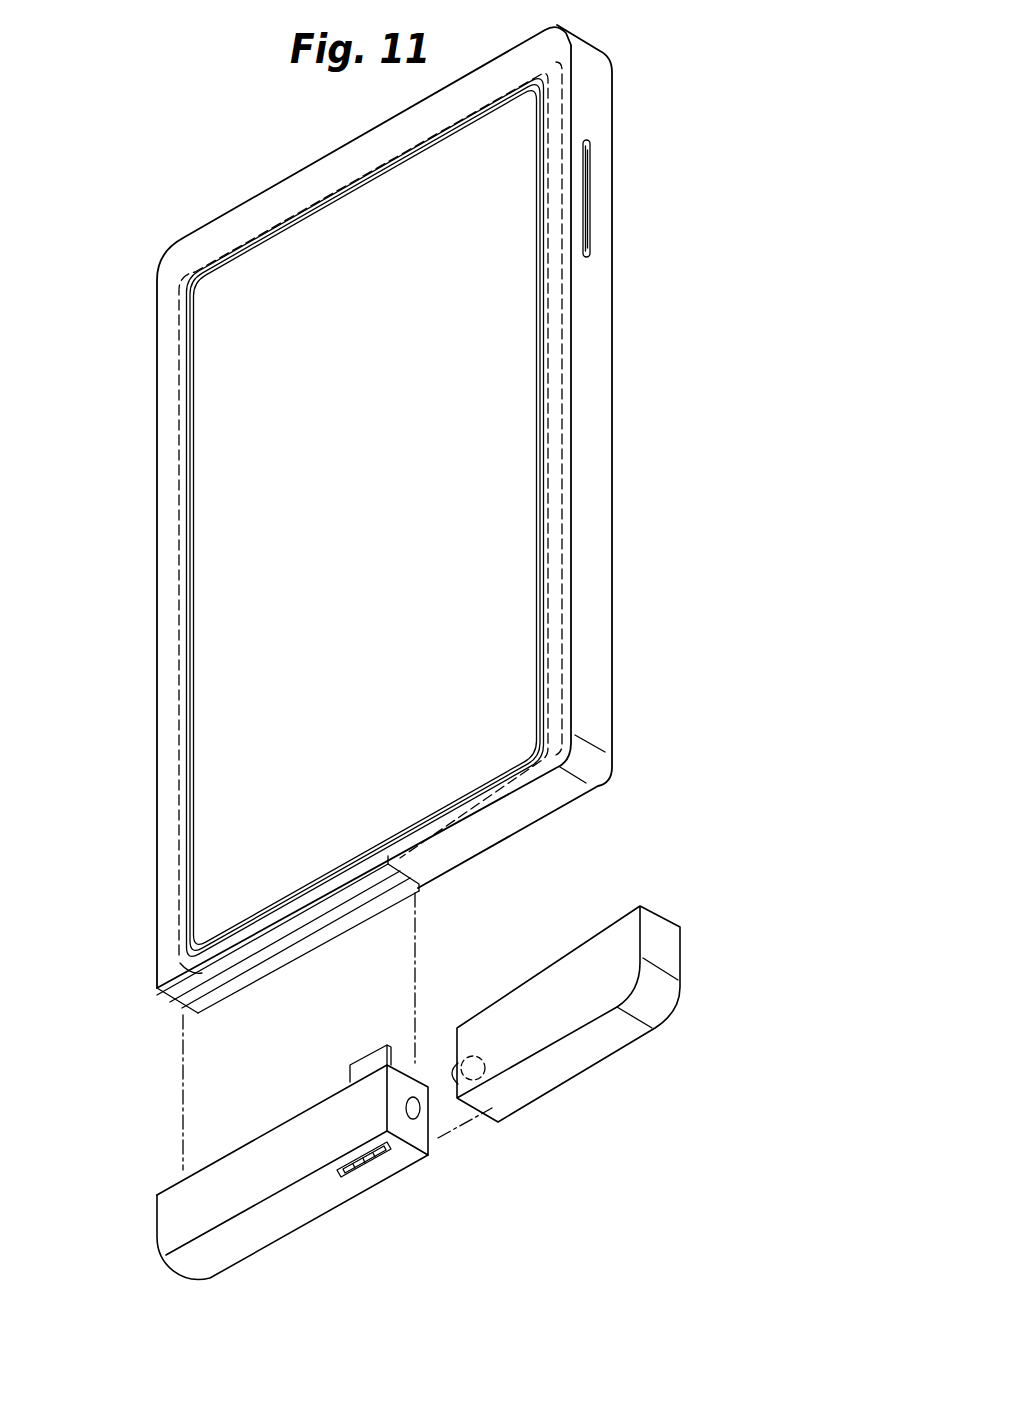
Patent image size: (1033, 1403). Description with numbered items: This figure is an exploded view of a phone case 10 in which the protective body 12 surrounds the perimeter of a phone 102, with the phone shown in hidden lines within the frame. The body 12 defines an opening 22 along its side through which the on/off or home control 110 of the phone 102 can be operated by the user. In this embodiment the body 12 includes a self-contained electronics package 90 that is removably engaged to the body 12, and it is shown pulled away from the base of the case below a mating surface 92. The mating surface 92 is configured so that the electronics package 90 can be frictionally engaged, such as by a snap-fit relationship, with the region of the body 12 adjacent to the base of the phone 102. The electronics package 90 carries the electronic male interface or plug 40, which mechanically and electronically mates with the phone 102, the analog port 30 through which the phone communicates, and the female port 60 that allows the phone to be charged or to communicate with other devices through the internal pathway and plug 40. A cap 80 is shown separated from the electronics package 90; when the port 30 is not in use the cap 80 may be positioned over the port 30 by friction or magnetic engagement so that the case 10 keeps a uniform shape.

The phone case 10 is at (158, 233).
The body 12 is at (590, 392).
The opening 22 is at (590, 228).
The port 30 is at (423, 1110).
The plug 40 is at (377, 1045).
The female port 60 is at (370, 1168).
The cap 80 is at (623, 962).
The electronics package 90 is at (163, 1220).
The mating surface 92 is at (223, 1002).
The phone 102 is at (552, 115).
The control 110 is at (591, 165).